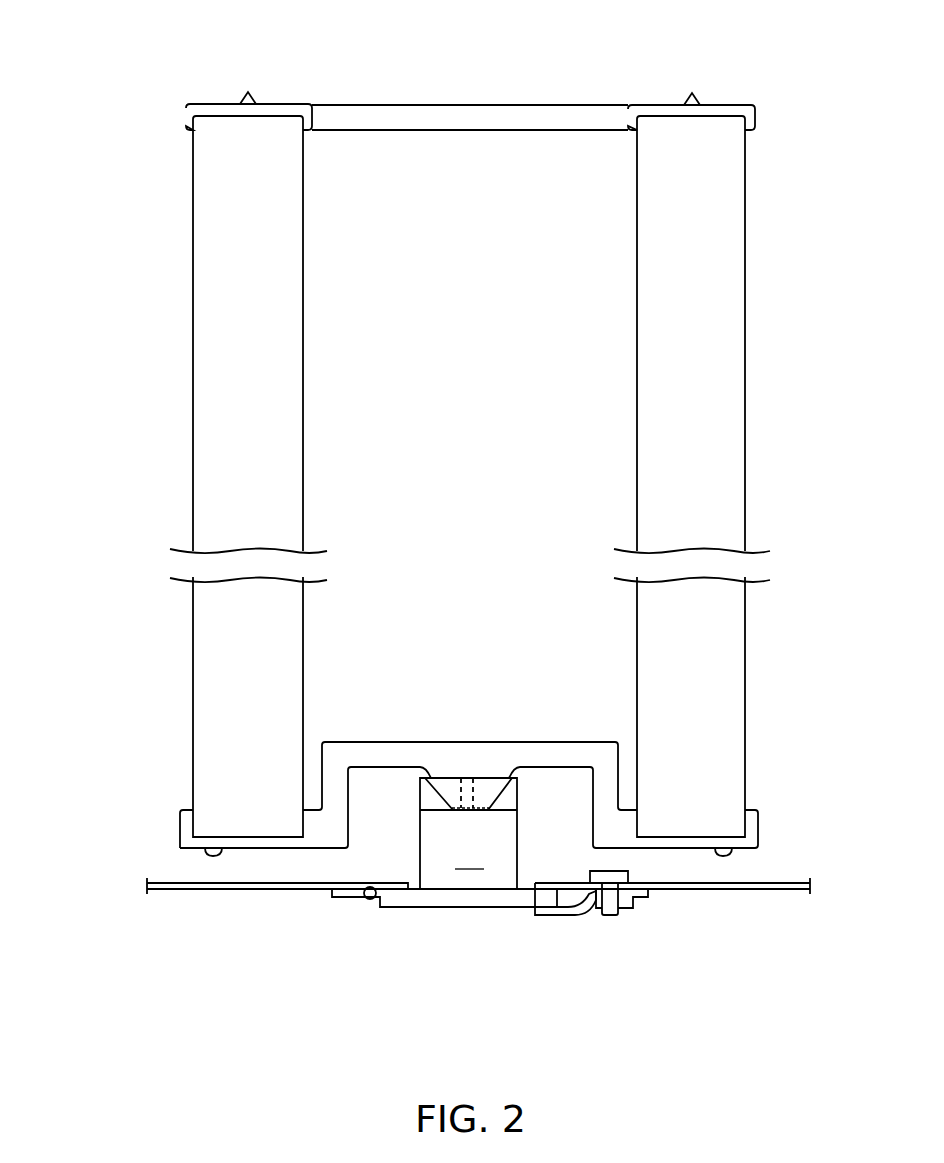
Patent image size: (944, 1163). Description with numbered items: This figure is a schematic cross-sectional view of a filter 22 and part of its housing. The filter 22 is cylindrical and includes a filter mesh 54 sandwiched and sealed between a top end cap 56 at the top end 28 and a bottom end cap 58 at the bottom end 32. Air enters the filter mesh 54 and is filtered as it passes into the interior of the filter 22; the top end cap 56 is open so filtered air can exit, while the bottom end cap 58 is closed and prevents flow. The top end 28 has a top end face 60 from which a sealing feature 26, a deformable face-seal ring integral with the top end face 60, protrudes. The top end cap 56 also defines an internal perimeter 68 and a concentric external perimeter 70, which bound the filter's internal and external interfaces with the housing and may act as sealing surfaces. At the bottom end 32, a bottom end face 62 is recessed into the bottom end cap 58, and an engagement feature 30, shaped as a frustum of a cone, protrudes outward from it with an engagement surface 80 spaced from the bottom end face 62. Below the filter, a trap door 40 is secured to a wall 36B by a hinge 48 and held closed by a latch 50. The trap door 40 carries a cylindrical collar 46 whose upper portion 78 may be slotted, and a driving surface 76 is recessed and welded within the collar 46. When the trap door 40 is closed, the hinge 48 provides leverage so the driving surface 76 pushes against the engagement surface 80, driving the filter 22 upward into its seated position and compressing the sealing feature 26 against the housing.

The filter 22 is at (150, 40).
The sealing feature 26 is at (692, 105).
The top end 28 is at (90, 159).
The engagement feature 30 is at (448, 787).
The bottom end 32 is at (842, 790).
The wall 36B is at (225, 889).
The trap door 40 is at (478, 908).
The collar 46 is at (437, 795).
The hinge 48 is at (371, 899).
The latch 50 is at (581, 916).
The filter mesh 54 is at (746, 338).
The top end cap 56 is at (758, 107).
The bottom end cap 58 is at (760, 826).
The top end face 60 is at (281, 104).
The bottom end face 62 is at (555, 768).
The internal perimeter 68 is at (318, 130).
The external perimeter 70 is at (186, 113).
The driving surface 76 is at (436, 814).
The upper portion 78 is at (418, 798).
The engagement surface 80 is at (478, 801).